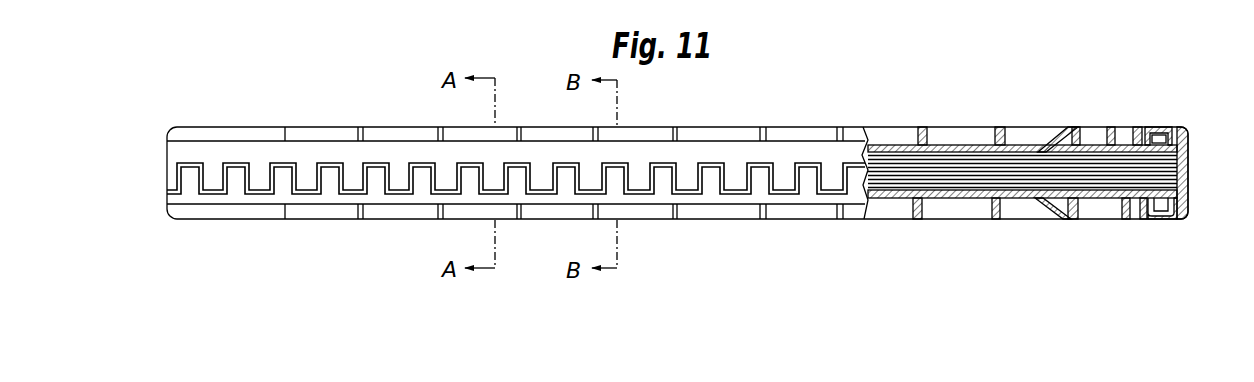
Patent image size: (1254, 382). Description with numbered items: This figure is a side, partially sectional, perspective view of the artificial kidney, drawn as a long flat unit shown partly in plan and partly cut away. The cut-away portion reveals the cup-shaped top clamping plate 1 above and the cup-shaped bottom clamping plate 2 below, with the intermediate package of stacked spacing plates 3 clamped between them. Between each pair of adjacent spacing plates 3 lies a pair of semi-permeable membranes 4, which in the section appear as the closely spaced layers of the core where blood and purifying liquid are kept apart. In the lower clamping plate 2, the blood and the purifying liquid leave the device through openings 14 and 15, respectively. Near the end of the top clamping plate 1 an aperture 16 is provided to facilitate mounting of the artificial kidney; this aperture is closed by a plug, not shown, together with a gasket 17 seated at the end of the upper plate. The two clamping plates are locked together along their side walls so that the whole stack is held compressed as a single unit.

The top clamping plate 1 is at (950, 137).
The bottom clamping plate 2 is at (955, 204).
The spacing plates 3 is at (1008, 191).
The semi-permeable membranes 4 is at (1027, 186).
The opening 14 is at (1160, 206).
The opening 15 is at (1105, 202).
The aperture 16 is at (1157, 137).
The gasket 17 is at (1190, 131).